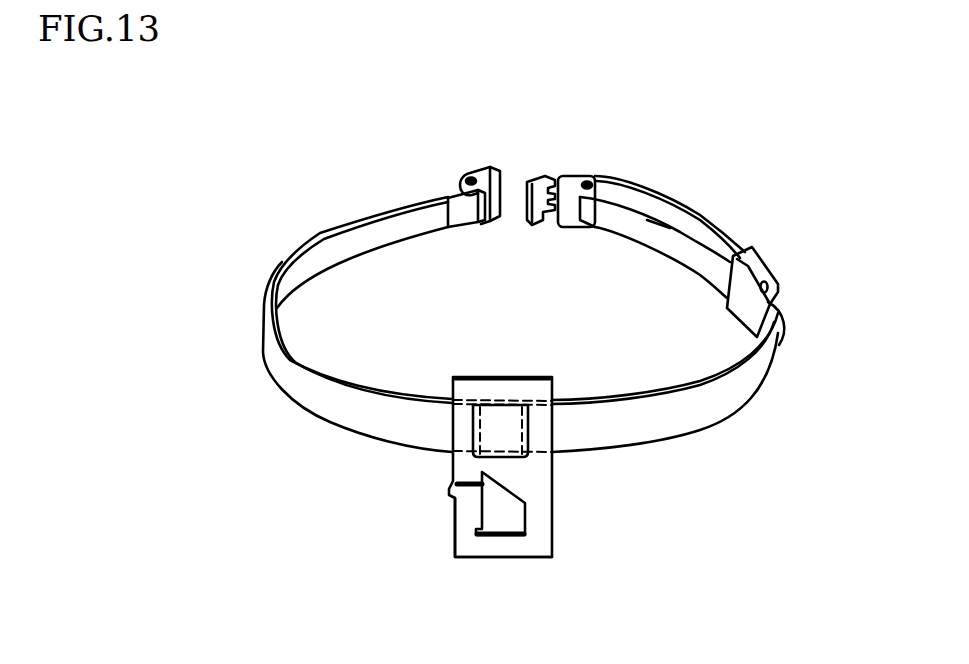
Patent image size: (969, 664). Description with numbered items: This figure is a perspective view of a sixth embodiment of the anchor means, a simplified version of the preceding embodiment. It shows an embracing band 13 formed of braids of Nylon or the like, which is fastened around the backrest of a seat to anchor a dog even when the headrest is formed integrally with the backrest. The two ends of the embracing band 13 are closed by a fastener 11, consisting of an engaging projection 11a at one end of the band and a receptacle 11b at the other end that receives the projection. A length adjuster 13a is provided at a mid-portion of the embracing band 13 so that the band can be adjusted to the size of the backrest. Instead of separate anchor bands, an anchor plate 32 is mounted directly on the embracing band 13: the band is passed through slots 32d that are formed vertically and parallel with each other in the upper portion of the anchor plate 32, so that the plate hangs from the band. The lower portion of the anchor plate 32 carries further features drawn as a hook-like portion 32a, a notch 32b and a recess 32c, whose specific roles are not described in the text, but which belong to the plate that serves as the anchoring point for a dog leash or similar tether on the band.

The fastener 11 is at (535, 228).
The engaging projection 11a is at (576, 172).
The receptacle 11b is at (480, 172).
The embracing band 13 is at (357, 220).
The length adjuster 13a is at (758, 272).
The anchor plate 32 is at (560, 505).
The hook portion 32a is at (505, 518).
The notch 32b is at (455, 485).
The recess 32c is at (482, 510).
The slots 32d is at (476, 409).